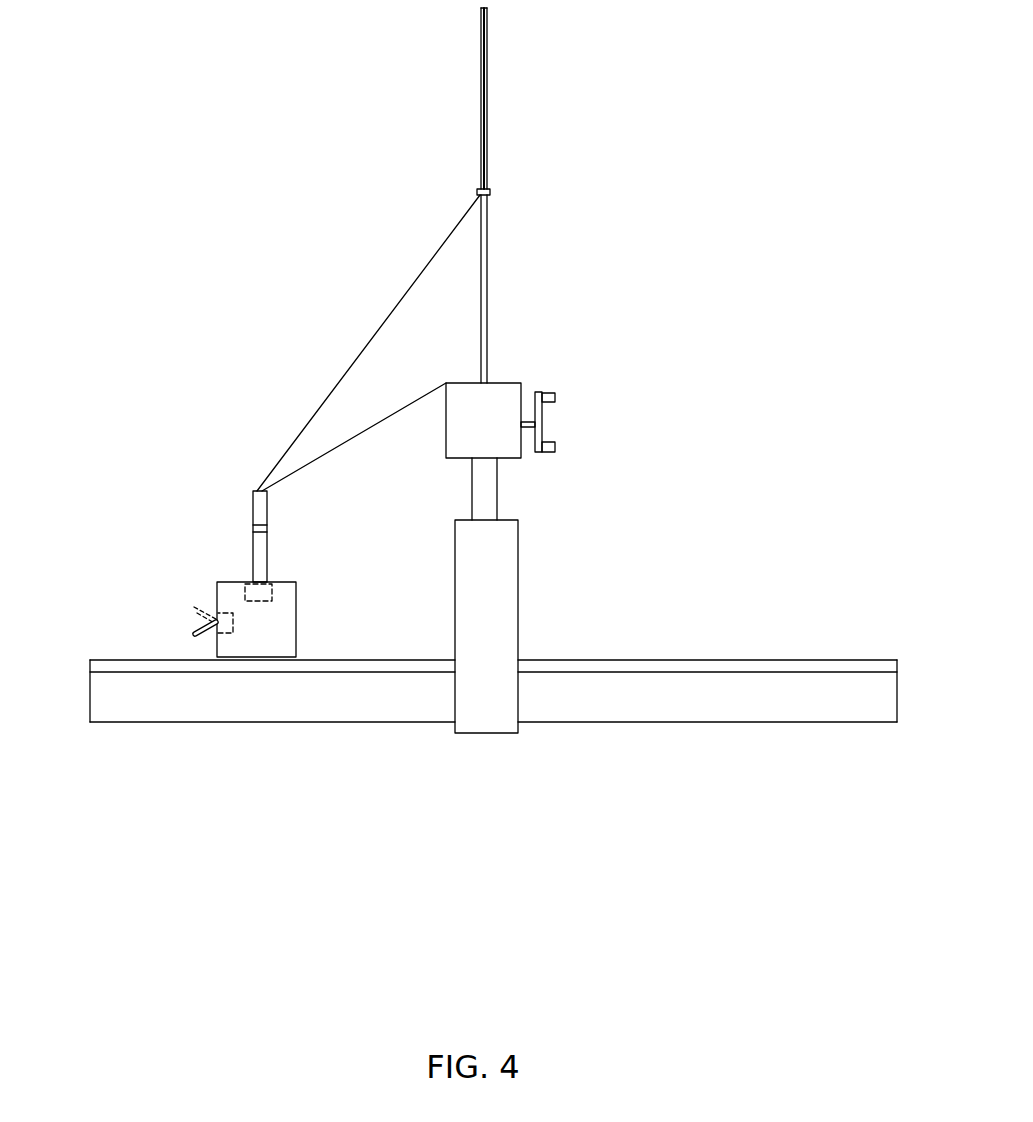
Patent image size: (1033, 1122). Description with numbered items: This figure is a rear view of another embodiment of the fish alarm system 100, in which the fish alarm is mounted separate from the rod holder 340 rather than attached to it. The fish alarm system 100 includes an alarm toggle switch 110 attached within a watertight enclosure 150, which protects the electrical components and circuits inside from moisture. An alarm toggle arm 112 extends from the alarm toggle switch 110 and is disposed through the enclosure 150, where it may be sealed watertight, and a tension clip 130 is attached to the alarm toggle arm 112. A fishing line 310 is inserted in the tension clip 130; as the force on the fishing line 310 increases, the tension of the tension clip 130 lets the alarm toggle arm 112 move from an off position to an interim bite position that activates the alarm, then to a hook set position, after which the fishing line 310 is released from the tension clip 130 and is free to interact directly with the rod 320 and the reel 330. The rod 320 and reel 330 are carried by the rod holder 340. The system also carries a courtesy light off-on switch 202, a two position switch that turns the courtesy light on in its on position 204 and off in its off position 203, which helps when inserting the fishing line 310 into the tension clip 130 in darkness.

The fish alarm system 100 is at (330, 597).
The alarm toggle switch 110 is at (307, 715).
The alarm toggle arm 112 is at (182, 504).
The tension clip 130 is at (183, 498).
The enclosure 150 is at (190, 586).
The courtesy light off-on switch 202 is at (263, 720).
The off position 203 is at (121, 614).
The on position 204 is at (125, 584).
The fishing line 310 is at (343, 343).
The rod 320 is at (568, 195).
The reel 330 is at (533, 354).
The rod holder 340 is at (564, 595).